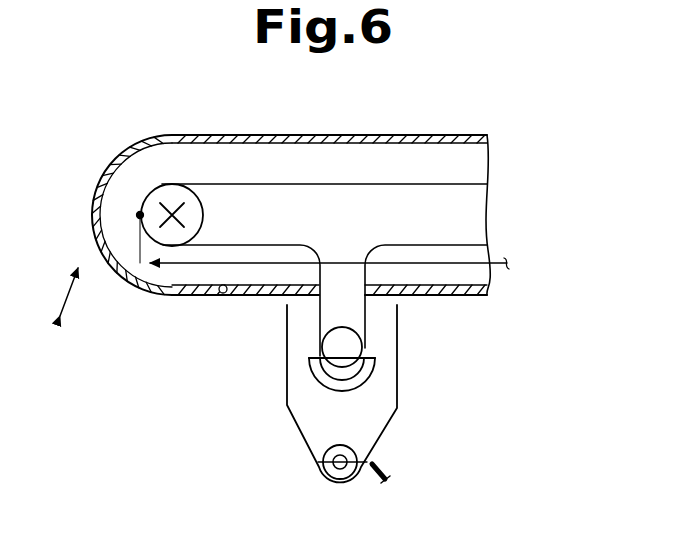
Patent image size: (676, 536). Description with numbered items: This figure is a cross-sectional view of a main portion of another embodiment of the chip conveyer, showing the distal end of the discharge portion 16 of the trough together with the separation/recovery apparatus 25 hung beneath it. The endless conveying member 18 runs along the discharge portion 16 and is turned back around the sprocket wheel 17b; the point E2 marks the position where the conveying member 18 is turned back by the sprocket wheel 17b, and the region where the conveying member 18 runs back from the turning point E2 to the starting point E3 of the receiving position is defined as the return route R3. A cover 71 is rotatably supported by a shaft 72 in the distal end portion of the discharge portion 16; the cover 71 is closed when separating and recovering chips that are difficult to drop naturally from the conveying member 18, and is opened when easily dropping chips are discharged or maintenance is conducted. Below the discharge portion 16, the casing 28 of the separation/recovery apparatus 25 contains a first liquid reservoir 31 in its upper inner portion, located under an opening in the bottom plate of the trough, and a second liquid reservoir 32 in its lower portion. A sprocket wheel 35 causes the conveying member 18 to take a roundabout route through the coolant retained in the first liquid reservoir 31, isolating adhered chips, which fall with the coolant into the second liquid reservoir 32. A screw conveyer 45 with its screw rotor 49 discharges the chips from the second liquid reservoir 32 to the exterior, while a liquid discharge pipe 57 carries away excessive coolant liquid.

The discharge portion 16 is at (437, 140).
The sprocket wheel 17b is at (187, 187).
The conveying member 18 is at (317, 184).
The separation/recovery apparatus 25 is at (407, 421).
The casing 28 is at (397, 375).
The first liquid reservoir 31 is at (320, 383).
The second liquid reservoir 32 is at (330, 481).
The sprocket wheel 35 is at (349, 332).
The screw conveyer 45 is at (305, 448).
The screw rotor 49 is at (355, 447).
The liquid discharge pipe 57 is at (388, 471).
The cover 71 is at (123, 277).
The shaft 72 is at (223, 293).
The return route R3 is at (257, 287).
The turning point E2 is at (140, 215).
The starting point E3 is at (350, 263).